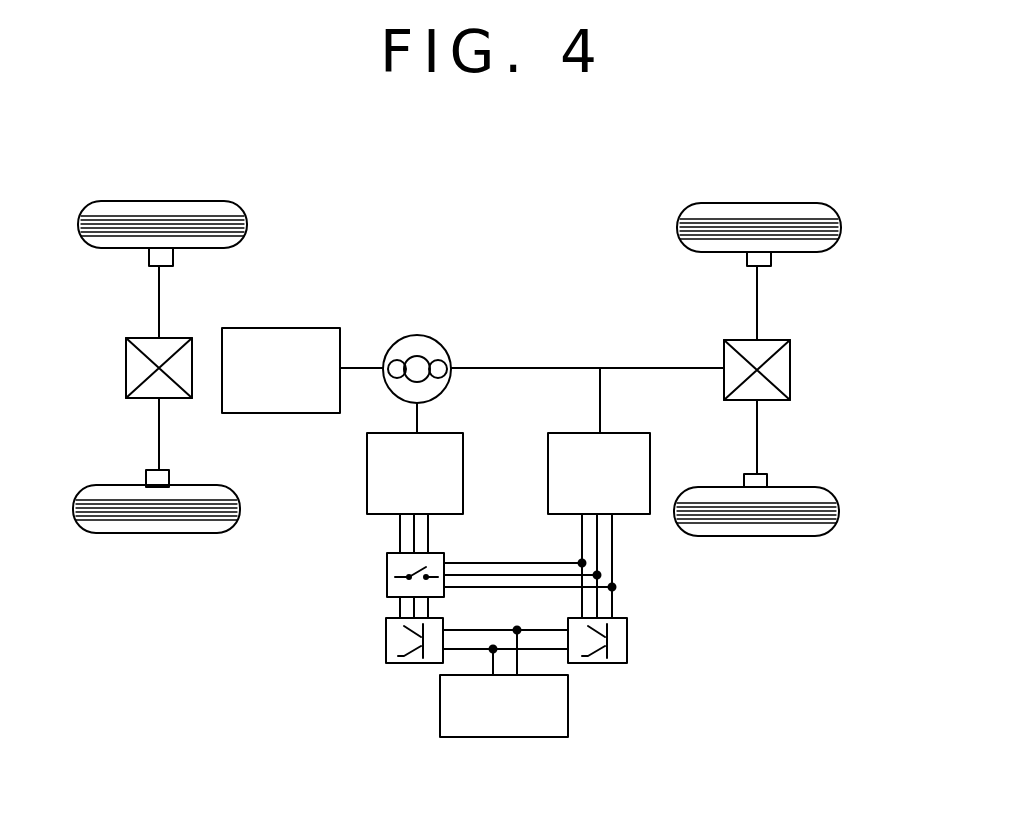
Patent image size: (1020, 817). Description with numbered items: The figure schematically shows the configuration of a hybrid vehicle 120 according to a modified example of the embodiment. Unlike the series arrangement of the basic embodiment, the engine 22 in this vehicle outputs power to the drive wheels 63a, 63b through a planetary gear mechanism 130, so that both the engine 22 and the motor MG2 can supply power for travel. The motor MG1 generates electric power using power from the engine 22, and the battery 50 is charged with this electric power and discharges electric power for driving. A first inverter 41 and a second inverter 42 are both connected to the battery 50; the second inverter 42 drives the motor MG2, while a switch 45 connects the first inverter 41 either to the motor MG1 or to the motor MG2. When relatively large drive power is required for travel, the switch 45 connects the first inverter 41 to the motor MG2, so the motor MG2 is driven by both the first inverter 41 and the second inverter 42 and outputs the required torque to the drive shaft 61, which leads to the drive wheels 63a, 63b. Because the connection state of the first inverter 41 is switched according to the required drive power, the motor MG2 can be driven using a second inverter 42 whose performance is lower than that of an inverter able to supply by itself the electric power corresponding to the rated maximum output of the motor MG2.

The hybrid vehicle 120 is at (513, 193).
The engine 22 is at (292, 328).
The planetary gear mechanism 130 is at (440, 336).
The motor MG1 is at (367, 477).
The motor MG2 is at (548, 470).
The switch 45 is at (387, 577).
The first inverter 41 is at (386, 645).
The second inverter 42 is at (627, 640).
The battery 50 is at (568, 700).
The drive shaft 61 is at (685, 367).
The drive wheel 63a is at (745, 203).
The drive wheel 63b is at (745, 536).